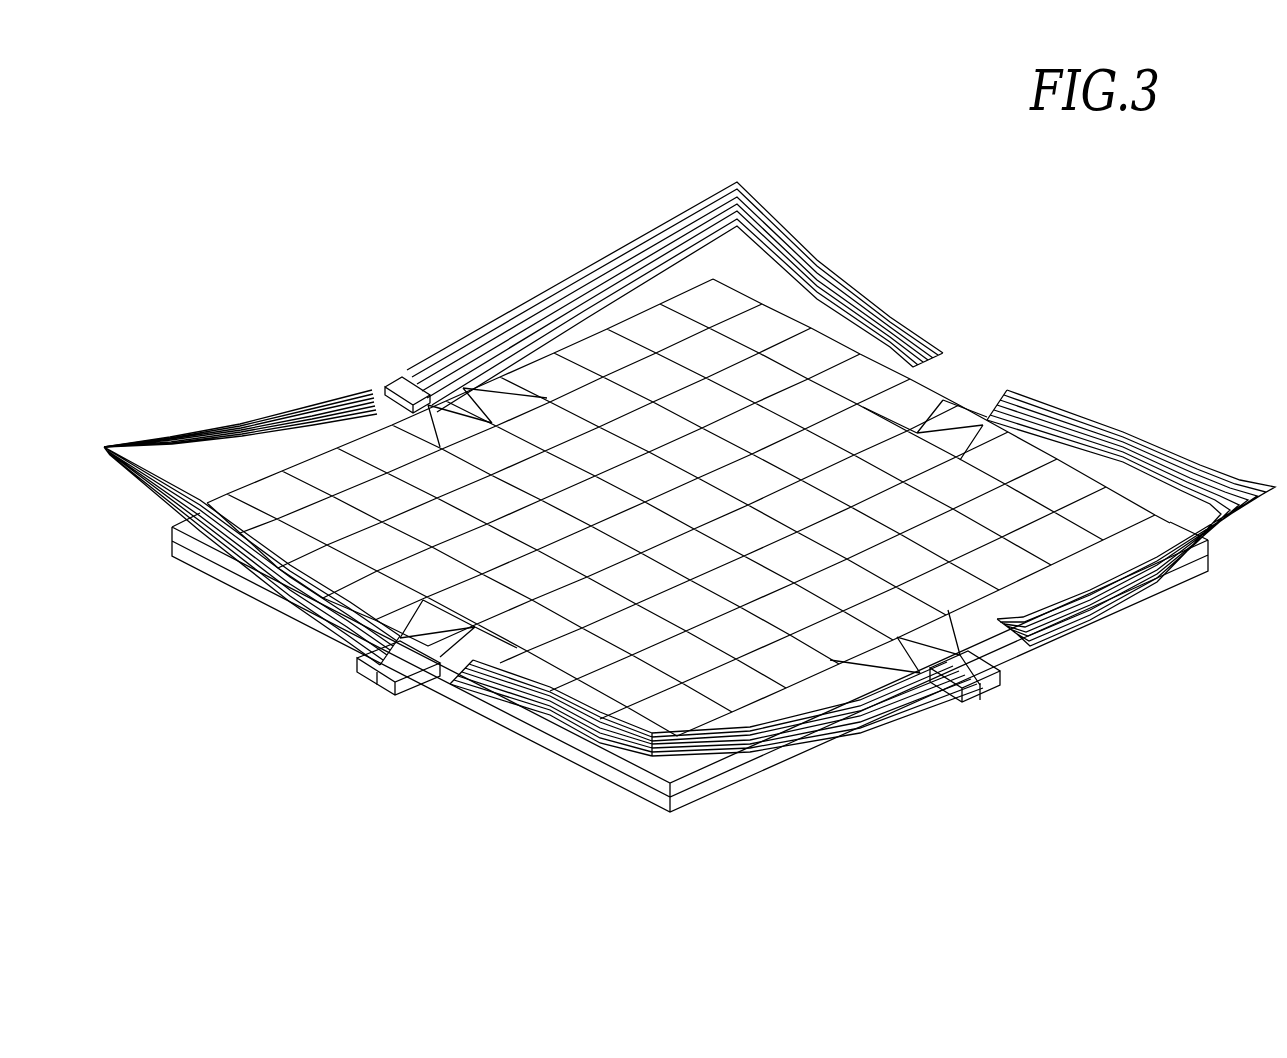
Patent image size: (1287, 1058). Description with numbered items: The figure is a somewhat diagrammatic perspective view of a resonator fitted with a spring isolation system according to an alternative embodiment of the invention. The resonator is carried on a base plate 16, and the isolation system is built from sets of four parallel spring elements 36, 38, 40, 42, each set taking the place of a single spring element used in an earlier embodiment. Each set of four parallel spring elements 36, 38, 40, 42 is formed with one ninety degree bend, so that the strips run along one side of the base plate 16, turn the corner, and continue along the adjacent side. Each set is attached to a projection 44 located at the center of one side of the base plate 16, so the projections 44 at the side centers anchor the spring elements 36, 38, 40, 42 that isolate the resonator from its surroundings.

The base plate 16 is at (675, 770).
The parallel spring element 36 is at (292, 418).
The parallel spring element 38 is at (325, 413).
The parallel spring element 40 is at (362, 410).
The parallel spring element 42 is at (383, 403).
The projection 44 is at (993, 675).